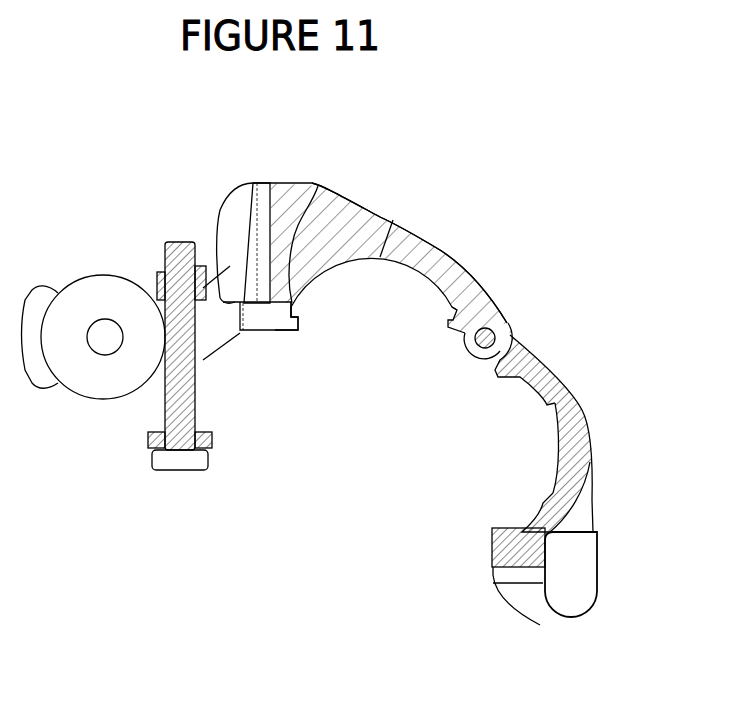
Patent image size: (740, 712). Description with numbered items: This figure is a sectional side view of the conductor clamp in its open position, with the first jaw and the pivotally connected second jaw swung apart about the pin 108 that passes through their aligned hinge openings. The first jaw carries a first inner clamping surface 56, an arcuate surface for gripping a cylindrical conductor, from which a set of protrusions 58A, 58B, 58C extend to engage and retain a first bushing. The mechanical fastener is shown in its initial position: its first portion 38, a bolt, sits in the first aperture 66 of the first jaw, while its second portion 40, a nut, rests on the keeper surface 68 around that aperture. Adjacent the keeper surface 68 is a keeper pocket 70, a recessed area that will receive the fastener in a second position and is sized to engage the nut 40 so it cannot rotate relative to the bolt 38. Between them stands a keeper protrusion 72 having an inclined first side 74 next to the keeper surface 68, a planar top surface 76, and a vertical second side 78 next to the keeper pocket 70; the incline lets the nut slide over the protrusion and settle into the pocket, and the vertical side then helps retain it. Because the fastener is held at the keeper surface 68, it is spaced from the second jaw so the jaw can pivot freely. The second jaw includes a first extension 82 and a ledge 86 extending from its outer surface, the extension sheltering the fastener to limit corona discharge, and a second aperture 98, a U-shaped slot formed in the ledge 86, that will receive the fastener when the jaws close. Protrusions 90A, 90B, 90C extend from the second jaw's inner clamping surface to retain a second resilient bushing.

The first portion 38 is at (165, 455).
The second portion 40 is at (164, 290).
The first inner clamping surface 56 is at (403, 260).
The protrusion 58A is at (318, 187).
The protrusion 58B is at (393, 220).
The protrusion 58C is at (449, 320).
The first aperture 66 is at (209, 335).
The keeper surface 68 is at (163, 295).
The keeper pocket 70 is at (270, 330).
The keeper protrusion 72 is at (225, 305).
The inclined first side 74 is at (202, 267).
The planar top surface 76 is at (218, 255).
The vertical second side 78 is at (254, 181).
The first extension 82 is at (573, 598).
The ledge 86 is at (540, 620).
The protrusion 90A is at (593, 533).
The protrusion 90B is at (550, 479).
The protrusion 90C is at (515, 366).
The second aperture 98 is at (518, 585).
The pin 108 is at (502, 322).